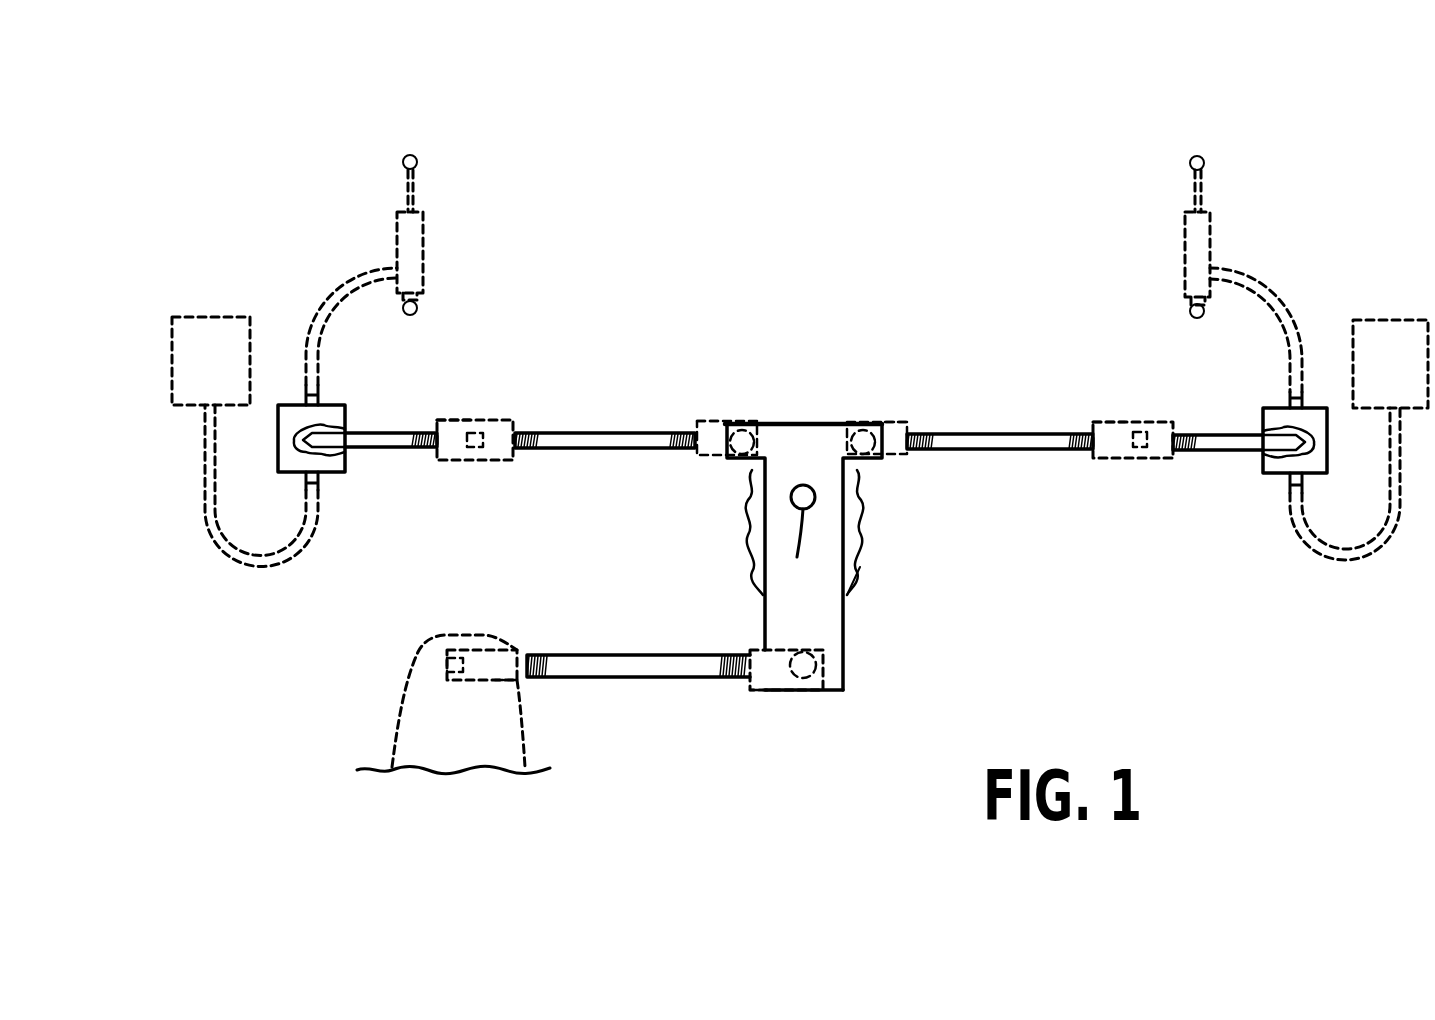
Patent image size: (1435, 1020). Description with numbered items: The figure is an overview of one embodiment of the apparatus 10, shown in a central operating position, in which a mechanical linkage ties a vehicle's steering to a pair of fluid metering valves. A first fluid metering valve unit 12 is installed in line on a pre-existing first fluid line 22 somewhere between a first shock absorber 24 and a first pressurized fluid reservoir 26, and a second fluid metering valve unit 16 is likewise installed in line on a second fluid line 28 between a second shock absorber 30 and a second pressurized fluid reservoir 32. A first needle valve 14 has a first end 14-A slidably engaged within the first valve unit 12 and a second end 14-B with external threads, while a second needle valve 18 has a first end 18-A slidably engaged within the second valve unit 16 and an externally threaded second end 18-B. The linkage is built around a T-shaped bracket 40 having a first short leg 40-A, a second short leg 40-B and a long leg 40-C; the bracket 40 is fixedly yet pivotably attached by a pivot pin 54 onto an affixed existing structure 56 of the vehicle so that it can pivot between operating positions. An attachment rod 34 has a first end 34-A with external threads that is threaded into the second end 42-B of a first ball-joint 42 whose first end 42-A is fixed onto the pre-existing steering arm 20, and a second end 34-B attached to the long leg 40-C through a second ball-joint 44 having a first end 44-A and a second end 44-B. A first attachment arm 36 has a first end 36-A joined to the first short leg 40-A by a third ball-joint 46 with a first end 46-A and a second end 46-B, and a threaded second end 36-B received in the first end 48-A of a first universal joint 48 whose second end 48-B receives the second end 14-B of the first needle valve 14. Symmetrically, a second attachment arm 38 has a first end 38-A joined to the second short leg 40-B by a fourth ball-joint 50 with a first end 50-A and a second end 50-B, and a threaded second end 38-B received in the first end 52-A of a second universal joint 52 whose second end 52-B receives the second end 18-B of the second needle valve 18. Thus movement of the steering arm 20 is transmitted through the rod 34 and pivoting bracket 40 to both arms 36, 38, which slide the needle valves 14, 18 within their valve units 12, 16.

The adjustable linkage assembly 10 is at (831, 278).
The first fluid metering valve unit 12 is at (286, 458).
The first needle valve 14 is at (373, 443).
The first end of first needle valve 14-A is at (330, 428).
The second end of first needle valve 14-B is at (426, 452).
The second fluid metering valve unit 16 is at (1275, 475).
The second needle valve 18 is at (1241, 448).
The first end of second needle valve 18-A is at (1275, 420).
The second end of second needle valve 18-B is at (1175, 460).
The steering arm 20 is at (473, 760).
The first fluid line 22 is at (338, 300).
The first shock absorber 24 is at (422, 250).
The first pressurized fluid reservoir 26 is at (206, 335).
The second fluid line 28 is at (1268, 296).
The second shock absorber 30 is at (1183, 257).
The second pressurized fluid reservoir 32 is at (1385, 335).
The attachment rod 34 is at (637, 663).
The first end of attachment rod 34-A is at (537, 664).
The second end of attachment rod 34-B is at (728, 660).
The first attachment arm 36 is at (603, 450).
The first end of first attachment arm 36-A is at (687, 450).
The second end of first attachment arm 36-B is at (523, 450).
The second attachment arm 38 is at (985, 452).
The first end of second attachment arm 38-A is at (917, 452).
The second end of second attachment arm 38-B is at (1080, 453).
The T-shaped bracket 40 is at (813, 440).
The first short leg 40-A is at (733, 458).
The second short leg 40-B is at (858, 463).
The long leg 40-C is at (843, 647).
The first ball-joint 42 is at (460, 637).
The first end of first ball-joint 42-A is at (467, 655).
The second end of first ball-joint 42-B is at (523, 678).
The second ball-joint 44 is at (785, 693).
The first end of second ball-joint 44-A is at (822, 692).
The second end of second ball-joint 44-B is at (764, 683).
The third ball-joint 46 is at (724, 421).
The first end of third ball-joint 46-A is at (738, 427).
The second end of third ball-joint 46-B is at (694, 430).
The first universal joint 48 is at (472, 462).
The first end of first universal joint 48-A is at (472, 428).
The second end of first universal joint 48-B is at (446, 418).
The fourth ball-joint 50 is at (877, 421).
The first end of fourth ball-joint 50-A is at (857, 428).
The second end of fourth ball-joint 50-B is at (905, 430).
The second universal joint 52 is at (1135, 460).
The first end of second universal joint 52-A is at (1096, 429).
The second end of second universal joint 52-B is at (1180, 417).
The pivot pin 54 is at (802, 535).
The affixed existing structure 56 is at (860, 567).